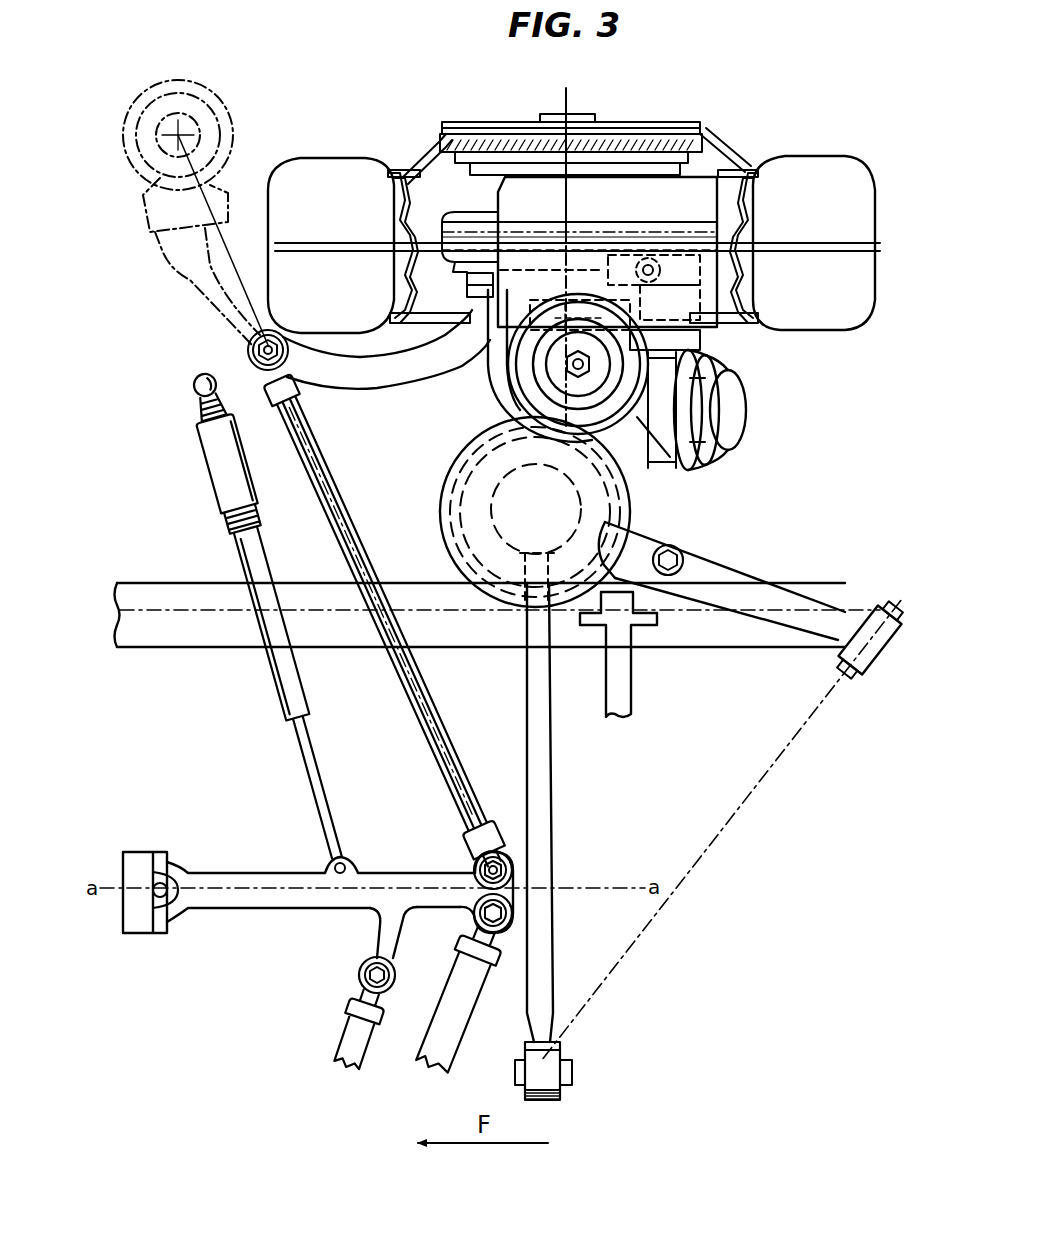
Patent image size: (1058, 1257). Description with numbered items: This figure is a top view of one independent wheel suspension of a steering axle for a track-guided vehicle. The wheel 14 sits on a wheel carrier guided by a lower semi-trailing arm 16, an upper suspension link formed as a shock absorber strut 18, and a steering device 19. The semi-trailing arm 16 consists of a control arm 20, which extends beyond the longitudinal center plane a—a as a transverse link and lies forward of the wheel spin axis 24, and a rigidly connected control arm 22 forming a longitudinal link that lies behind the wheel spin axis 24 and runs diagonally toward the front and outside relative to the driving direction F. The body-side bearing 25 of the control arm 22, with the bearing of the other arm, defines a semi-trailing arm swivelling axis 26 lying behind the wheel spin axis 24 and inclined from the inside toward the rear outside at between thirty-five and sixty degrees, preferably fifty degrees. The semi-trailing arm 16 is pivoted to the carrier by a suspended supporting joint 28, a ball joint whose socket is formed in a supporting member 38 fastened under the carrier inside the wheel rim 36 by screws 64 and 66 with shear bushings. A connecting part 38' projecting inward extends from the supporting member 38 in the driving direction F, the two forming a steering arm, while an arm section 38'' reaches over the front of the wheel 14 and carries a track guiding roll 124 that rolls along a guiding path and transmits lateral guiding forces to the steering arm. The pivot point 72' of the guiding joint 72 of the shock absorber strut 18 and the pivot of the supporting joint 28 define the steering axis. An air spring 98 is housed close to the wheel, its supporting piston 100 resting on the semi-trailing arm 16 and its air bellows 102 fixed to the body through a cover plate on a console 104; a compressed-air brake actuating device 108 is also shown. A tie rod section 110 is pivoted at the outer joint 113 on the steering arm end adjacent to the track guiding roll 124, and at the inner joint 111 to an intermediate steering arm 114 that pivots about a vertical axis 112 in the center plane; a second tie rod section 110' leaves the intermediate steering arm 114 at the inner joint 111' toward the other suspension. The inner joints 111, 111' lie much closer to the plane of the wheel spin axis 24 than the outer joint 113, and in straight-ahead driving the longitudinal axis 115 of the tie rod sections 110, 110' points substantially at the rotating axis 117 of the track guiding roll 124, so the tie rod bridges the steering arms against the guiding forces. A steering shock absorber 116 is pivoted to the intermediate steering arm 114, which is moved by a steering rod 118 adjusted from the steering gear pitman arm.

The wheel 14 is at (305, 150).
The lower semi-trailing arm 16 is at (724, 598).
The shock absorber strut 18 is at (680, 349).
The steering device 19 is at (217, 939).
The control arm 20 is at (546, 826).
The control arm 22 is at (772, 575).
The wheel spin axis 24 is at (567, 100).
The bearing 25 is at (873, 668).
The semi-trailing arm swivelling axis 26 is at (742, 812).
The supporting joint 28 is at (584, 296).
The wheel rim 36 is at (432, 142).
The supporting member 38 is at (782, 229).
The connecting part 38' is at (386, 377).
The arm section 38'' is at (200, 240).
The screw 64 is at (650, 240).
The screw 66 is at (507, 266).
The guiding joint 72 is at (596, 401).
The pivot point 72' is at (516, 366).
The air spring 98 is at (452, 562).
The supporting piston 100 is at (486, 450).
The air bellows 102 is at (443, 518).
The console 104 is at (513, 587).
The actuating device 108 is at (732, 402).
The tie rod section 110 is at (385, 621).
The tie rod section 110' is at (459, 1012).
The inner joint 111 is at (456, 843).
The inner joint 111' is at (540, 938).
The vertical axis 112 is at (156, 862).
The outer joint 113 is at (266, 372).
The intermediate steering arm 114 is at (262, 878).
The longitudinal axis 115 is at (316, 470).
The steering shock absorber 116 is at (240, 578).
The rotating axis 117 is at (209, 91).
The steering rod 118 is at (345, 1028).
The track guiding roll 124 is at (240, 130).